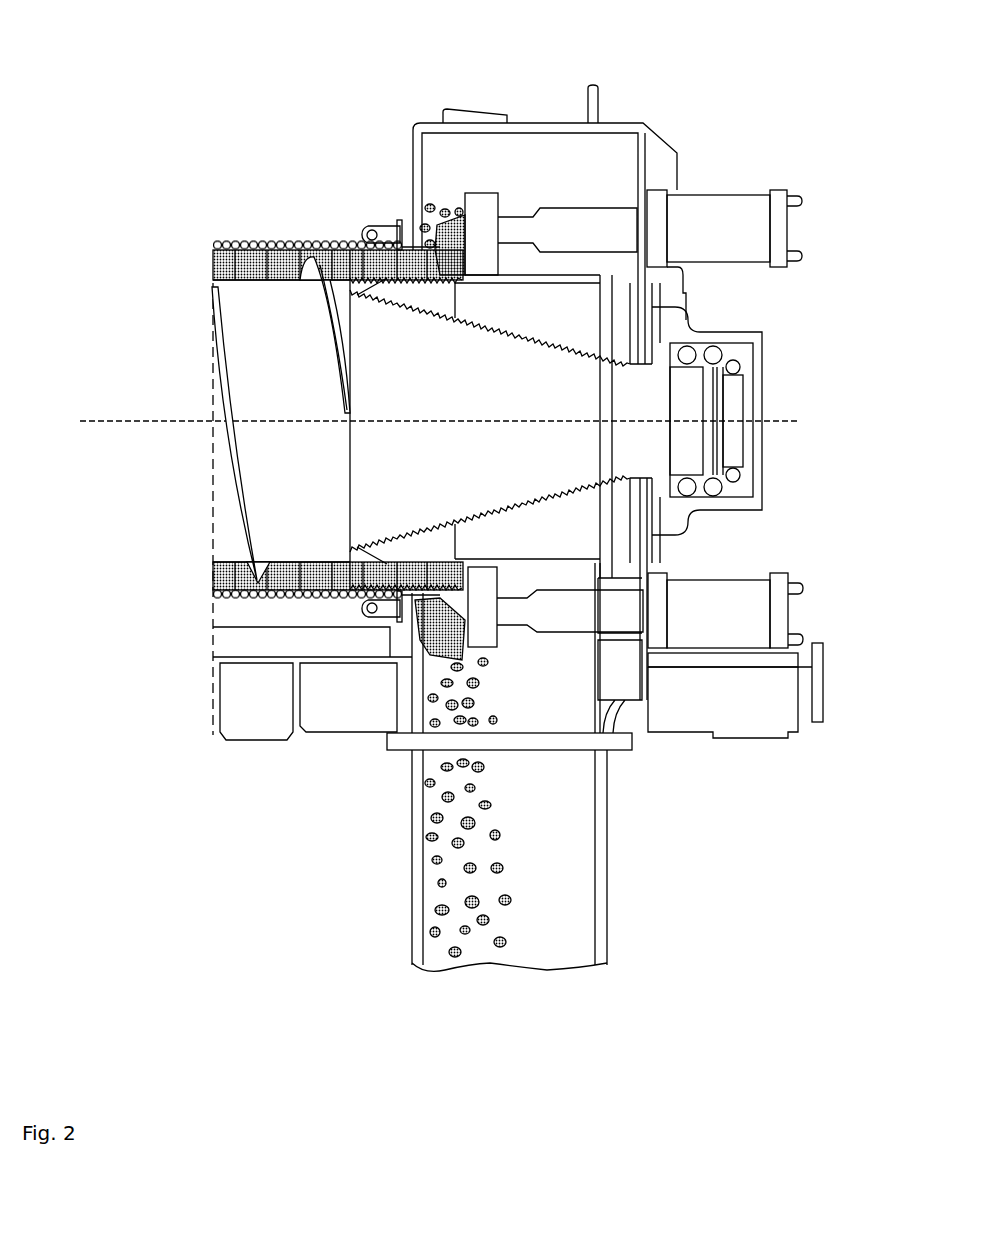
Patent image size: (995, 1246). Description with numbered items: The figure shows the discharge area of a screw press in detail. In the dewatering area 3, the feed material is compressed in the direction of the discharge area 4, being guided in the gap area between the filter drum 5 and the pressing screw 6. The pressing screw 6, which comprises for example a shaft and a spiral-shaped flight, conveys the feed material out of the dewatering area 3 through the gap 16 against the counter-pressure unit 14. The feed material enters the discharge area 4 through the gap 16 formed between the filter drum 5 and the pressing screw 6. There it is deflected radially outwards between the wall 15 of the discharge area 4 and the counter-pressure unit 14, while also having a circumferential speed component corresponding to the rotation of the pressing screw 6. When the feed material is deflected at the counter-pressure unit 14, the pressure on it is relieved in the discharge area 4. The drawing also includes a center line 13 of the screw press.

The dewatering area 3 is at (243, 607).
The discharge area 4 is at (437, 206).
The filter drum 5 is at (232, 243).
The pressing screw 6 is at (295, 465).
The axis of rotation 13 is at (647, 423).
The counter-pressure unit 14 is at (483, 225).
The wall of the discharge area 15 is at (418, 667).
The gap 16 is at (418, 265).